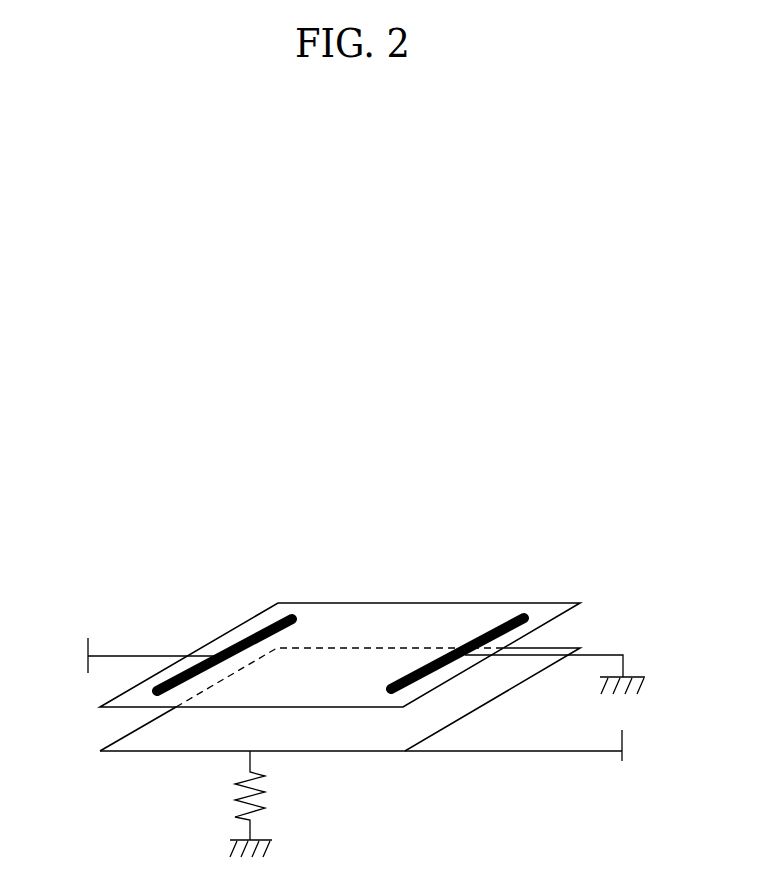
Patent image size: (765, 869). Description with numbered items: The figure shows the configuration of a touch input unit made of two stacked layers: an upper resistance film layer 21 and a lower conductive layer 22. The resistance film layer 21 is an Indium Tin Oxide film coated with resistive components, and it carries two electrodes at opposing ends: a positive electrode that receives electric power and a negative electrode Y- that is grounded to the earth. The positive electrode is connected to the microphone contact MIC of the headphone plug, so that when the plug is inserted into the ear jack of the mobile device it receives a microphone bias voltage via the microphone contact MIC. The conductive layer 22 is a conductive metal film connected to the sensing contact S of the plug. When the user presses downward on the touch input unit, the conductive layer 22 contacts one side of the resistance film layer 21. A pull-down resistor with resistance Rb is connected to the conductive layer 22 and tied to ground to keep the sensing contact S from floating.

The resistance film layer 21 is at (403, 603).
The conductive layer 22 is at (150, 751).
The negative electrode Y- is at (493, 630).
The microphone contact MIC is at (136, 655).
The sensing contact S is at (522, 748).
The resistance of pull-down resistor Rb is at (261, 804).